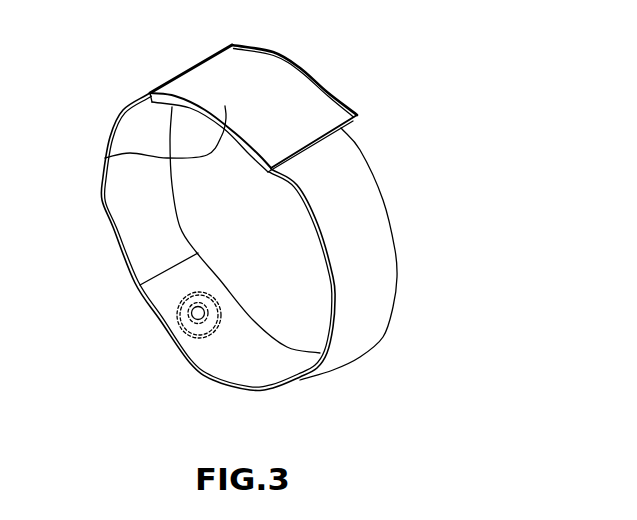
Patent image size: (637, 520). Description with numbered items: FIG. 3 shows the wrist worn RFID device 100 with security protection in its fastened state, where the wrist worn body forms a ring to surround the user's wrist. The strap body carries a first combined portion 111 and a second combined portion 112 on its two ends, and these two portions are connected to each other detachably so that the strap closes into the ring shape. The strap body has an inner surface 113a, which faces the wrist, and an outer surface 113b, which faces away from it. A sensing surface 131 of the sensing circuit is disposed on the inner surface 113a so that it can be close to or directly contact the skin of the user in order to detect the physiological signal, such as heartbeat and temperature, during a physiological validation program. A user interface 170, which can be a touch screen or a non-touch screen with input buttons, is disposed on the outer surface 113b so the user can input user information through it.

The wrist worn RFID device 100 is at (481, 66).
The first combined portion 111 is at (178, 323).
The second combined portion 112 is at (207, 332).
The inner surface 113a is at (132, 137).
The outer surface 113b is at (362, 194).
The sensing surface 131 is at (105, 160).
The user interface 170 is at (313, 92).